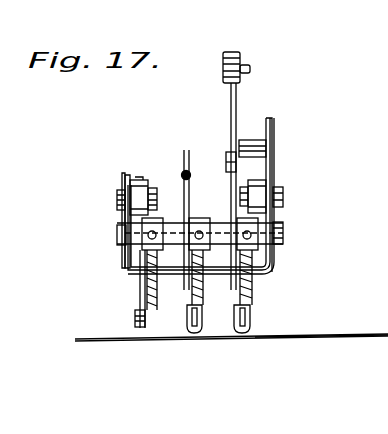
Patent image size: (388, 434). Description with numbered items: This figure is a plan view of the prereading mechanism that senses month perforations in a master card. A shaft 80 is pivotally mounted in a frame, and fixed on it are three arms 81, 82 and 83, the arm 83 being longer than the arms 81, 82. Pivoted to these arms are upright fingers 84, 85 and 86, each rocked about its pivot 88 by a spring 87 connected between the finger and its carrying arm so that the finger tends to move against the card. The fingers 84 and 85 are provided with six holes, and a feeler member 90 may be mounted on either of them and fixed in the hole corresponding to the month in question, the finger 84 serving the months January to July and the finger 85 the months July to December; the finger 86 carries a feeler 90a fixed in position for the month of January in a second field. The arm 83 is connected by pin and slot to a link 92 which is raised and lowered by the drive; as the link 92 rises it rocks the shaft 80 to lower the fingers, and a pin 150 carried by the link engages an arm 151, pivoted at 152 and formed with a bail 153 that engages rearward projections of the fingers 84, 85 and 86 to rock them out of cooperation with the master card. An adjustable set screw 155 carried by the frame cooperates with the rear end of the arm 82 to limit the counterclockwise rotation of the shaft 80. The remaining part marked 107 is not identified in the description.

The adjusting knob 107 is at (240, 60).
The pin 150 is at (254, 142).
The arm 151 is at (271, 128).
The link 92 is at (229, 157).
The arm 82 is at (184, 171).
The set screw 155 is at (184, 173).
The arm 83 is at (231, 189).
The pivot 152 is at (278, 196).
The shaft 80 is at (278, 236).
The bail 153 is at (263, 275).
The arm 81 is at (142, 293).
The pivot 88 is at (135, 314).
The feeler member 90 is at (140, 338).
The finger 84 is at (187, 327).
The finger 85 is at (202, 323).
The spring 87 is at (203, 295).
The finger 86 is at (250, 322).
The feeler 90a is at (258, 331).